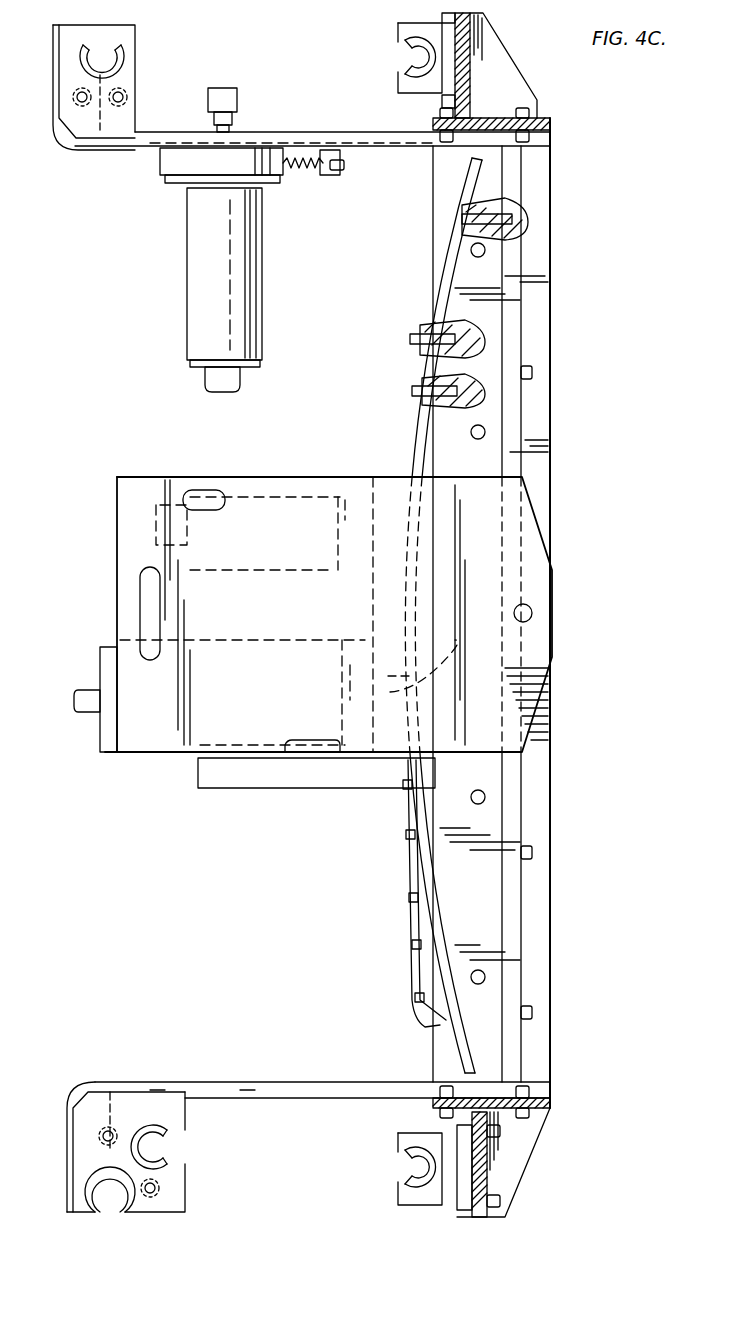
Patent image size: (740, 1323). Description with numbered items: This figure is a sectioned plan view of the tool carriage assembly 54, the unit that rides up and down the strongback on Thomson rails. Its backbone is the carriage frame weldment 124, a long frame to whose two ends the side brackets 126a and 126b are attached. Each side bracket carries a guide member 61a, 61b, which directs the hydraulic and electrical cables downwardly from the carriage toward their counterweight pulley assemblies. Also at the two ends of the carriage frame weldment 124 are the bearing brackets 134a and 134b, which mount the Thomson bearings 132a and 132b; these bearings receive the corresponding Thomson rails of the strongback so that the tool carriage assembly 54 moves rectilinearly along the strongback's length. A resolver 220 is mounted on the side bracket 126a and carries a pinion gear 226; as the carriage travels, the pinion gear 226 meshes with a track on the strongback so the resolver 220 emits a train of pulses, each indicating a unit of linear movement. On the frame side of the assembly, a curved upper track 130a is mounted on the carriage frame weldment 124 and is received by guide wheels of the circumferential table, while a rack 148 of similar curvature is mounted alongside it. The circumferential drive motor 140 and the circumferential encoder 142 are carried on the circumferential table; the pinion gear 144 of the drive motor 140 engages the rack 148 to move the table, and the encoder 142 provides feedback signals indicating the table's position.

The tool carriage assembly 54 is at (103, 178).
The guide member 61a is at (131, 80).
The guide member 61b is at (178, 1190).
The carriage frame weldment 124 is at (513, 787).
The side bracket 126a is at (314, 132).
The side bracket 126b is at (306, 1085).
The upper track 130a is at (433, 448).
The Thomson bearing 132a is at (398, 58).
The Thomson bearing 132b is at (405, 1172).
The bearing bracket 134a is at (503, 55).
The bearing bracket 134b is at (490, 1175).
The circumferential drive motor 140 is at (104, 755).
The circumferential encoder 142 is at (258, 497).
The pinion gear 144 is at (440, 663).
The rack 148 is at (430, 985).
The resolver 220 is at (247, 275).
The pinion gear 226 is at (236, 97).